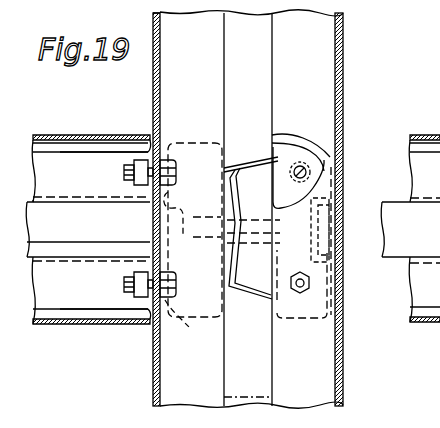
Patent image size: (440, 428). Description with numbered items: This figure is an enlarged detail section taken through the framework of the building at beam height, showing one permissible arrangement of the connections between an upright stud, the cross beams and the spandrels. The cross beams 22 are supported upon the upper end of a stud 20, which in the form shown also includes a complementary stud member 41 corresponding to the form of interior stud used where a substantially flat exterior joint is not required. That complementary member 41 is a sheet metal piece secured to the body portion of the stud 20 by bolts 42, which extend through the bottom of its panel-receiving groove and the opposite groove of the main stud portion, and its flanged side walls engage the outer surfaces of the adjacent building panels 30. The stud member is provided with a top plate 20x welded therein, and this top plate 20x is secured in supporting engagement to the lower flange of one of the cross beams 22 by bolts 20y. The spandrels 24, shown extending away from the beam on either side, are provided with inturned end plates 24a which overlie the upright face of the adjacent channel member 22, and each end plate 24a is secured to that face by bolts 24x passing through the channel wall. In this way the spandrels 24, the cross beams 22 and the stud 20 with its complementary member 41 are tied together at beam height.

The cross beam 22 is at (153, 88).
The spandrel 24 is at (68, 135).
The inturned end plate 24a is at (148, 310).
The bolt 24x is at (163, 157).
The building panel 30 is at (253, 75).
The stud 20 is at (252, 297).
The top plate 20x is at (290, 155).
The bolt 20y is at (303, 173).
The bolt 42 is at (293, 170).
The complementary stud member 41 is at (171, 333).